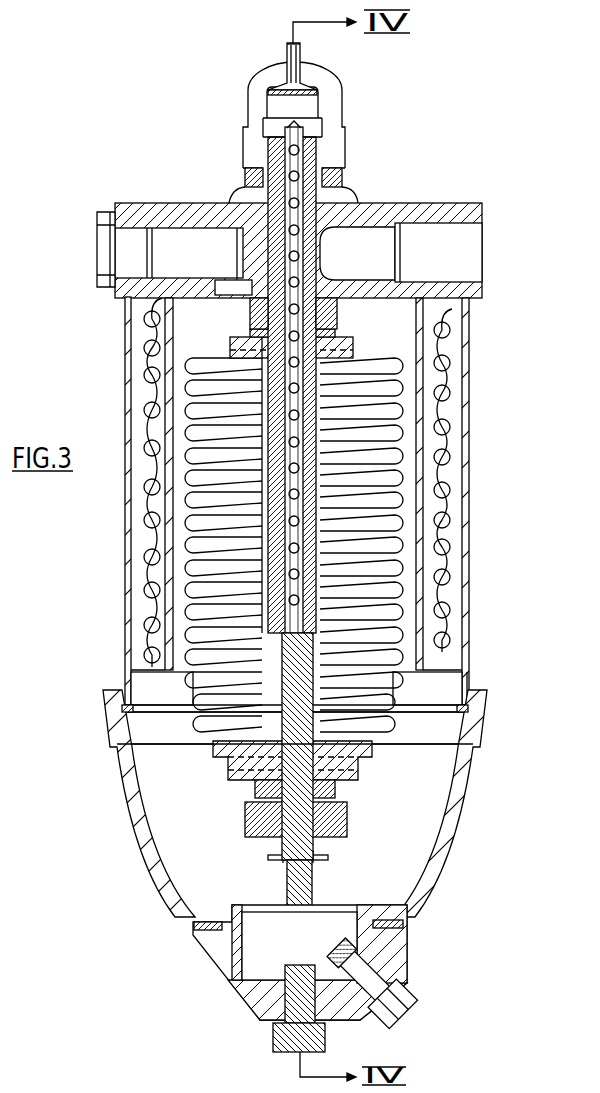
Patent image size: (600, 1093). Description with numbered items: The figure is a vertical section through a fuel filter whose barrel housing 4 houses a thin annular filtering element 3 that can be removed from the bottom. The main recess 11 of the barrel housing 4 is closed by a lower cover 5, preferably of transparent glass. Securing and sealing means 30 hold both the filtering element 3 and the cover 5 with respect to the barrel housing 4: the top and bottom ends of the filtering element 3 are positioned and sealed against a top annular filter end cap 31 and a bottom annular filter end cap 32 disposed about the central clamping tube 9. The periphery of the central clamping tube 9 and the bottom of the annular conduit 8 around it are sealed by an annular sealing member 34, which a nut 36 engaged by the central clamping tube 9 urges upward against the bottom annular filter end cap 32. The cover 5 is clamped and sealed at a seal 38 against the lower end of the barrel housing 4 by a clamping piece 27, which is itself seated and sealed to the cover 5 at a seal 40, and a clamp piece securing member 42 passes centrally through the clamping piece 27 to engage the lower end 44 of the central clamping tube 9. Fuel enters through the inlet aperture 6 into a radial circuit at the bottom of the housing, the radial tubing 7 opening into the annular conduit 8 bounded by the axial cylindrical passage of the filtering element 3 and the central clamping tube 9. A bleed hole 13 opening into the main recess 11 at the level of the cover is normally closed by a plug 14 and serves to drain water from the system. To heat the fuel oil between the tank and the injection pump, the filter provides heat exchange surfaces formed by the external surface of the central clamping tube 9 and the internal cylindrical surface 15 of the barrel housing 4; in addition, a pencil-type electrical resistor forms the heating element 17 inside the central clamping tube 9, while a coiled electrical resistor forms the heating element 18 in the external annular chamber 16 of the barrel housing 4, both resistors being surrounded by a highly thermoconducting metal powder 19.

The annular filtering element 3 is at (349, 700).
The barrel housing 4 is at (468, 578).
The lower cover 5 is at (468, 765).
The inlet aperture 6 is at (458, 252).
The radial tubing 7 is at (374, 257).
The annular conduit 8 is at (317, 388).
The central clamping tube 9 is at (288, 762).
The main recess 11 is at (215, 327).
The bleed hole 13 is at (356, 970).
The plug 14 is at (392, 1009).
The internal cylindrical surface 15 is at (408, 352).
The external annular chamber 16 is at (435, 413).
The heating element 17 is at (290, 247).
The heating element 18 is at (447, 462).
The thermoconducting metal powder 19 is at (325, 176).
The clamping piece 27 is at (253, 993).
The securing and sealing means 30 is at (410, 820).
The top annular filter end cap 31 is at (233, 348).
The bottom annular filter end cap 32 is at (213, 752).
The annular sealing member 34 is at (257, 790).
The nut 36 is at (258, 825).
The seal 38 is at (464, 708).
The seal 40 is at (392, 917).
The clamp piece securing member 42 is at (277, 1040).
The lower end of the central clamping tube 44 is at (293, 888).